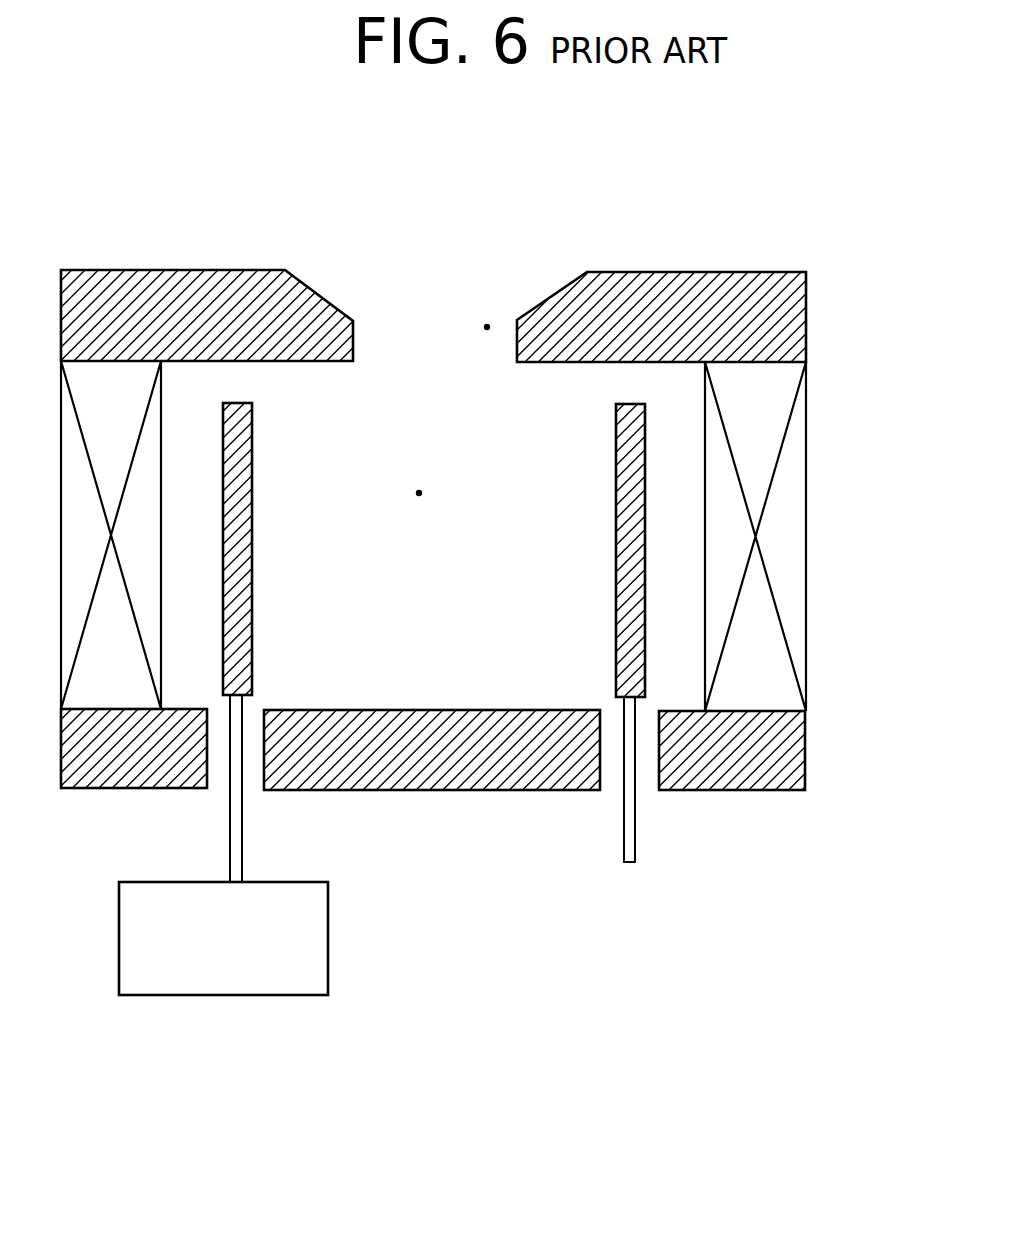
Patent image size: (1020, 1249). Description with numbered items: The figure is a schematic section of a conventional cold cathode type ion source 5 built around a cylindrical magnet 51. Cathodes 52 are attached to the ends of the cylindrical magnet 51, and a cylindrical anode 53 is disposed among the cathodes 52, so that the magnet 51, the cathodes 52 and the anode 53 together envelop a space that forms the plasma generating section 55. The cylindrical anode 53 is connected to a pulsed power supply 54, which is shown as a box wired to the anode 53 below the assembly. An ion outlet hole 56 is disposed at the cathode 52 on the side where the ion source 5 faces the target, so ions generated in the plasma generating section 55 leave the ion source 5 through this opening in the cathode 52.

The ion source 5 is at (703, 231).
The cylindrical magnet 51 is at (793, 524).
The cathodes 52 is at (793, 316).
The cylindrical anode 53 is at (645, 622).
The pulsed power supply 54 is at (307, 995).
The plasma generating section 55 is at (419, 492).
The ion outlet hole 56 is at (487, 327).